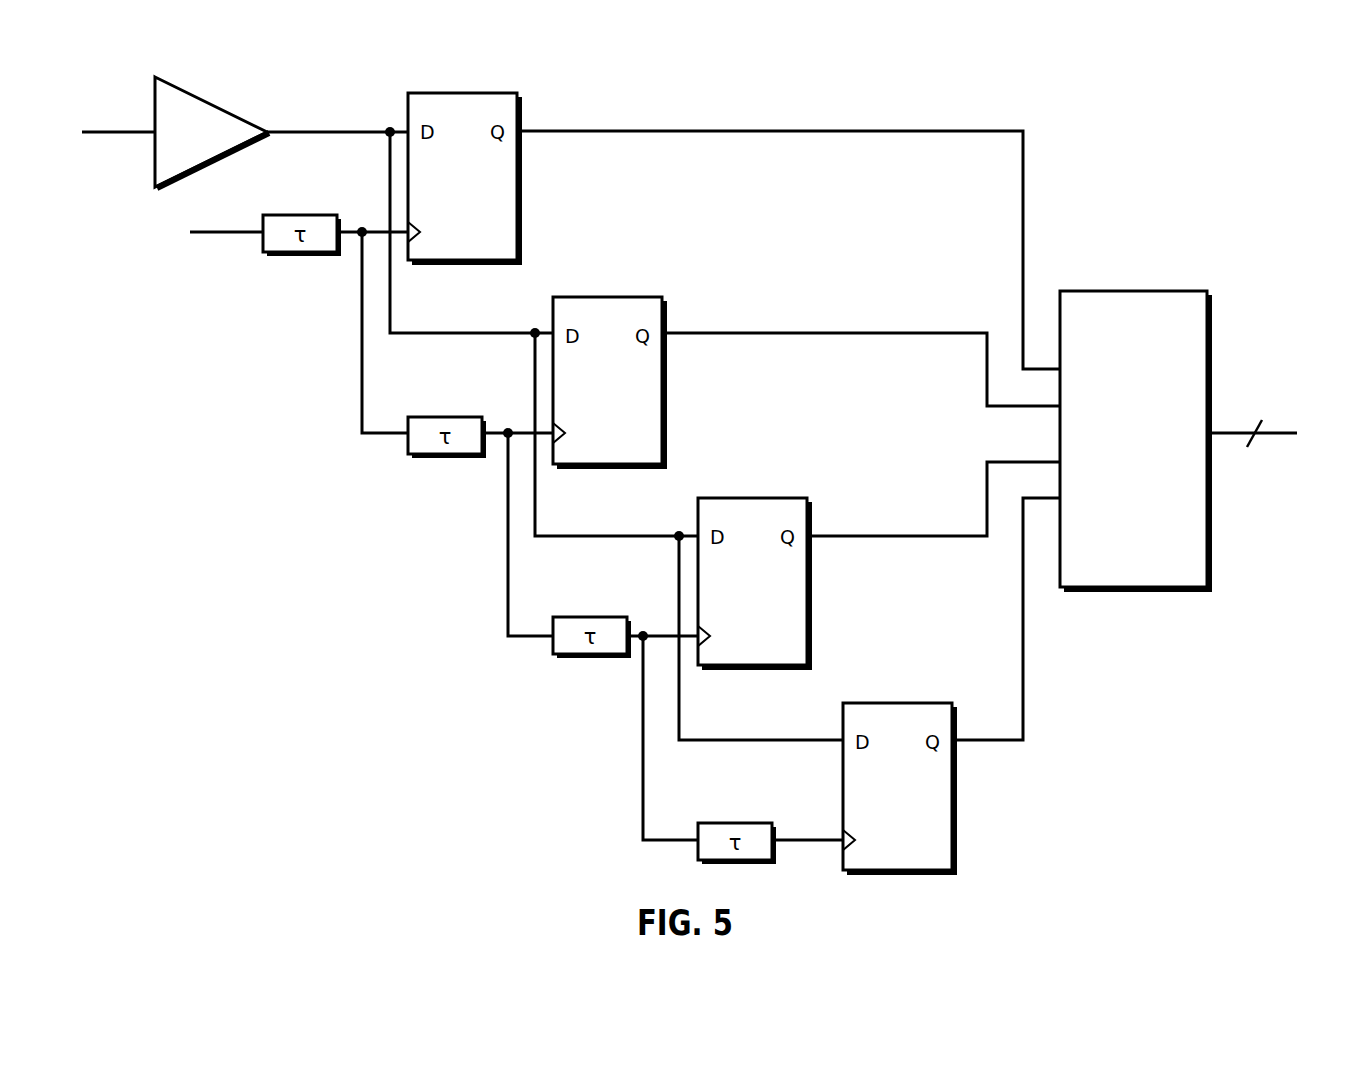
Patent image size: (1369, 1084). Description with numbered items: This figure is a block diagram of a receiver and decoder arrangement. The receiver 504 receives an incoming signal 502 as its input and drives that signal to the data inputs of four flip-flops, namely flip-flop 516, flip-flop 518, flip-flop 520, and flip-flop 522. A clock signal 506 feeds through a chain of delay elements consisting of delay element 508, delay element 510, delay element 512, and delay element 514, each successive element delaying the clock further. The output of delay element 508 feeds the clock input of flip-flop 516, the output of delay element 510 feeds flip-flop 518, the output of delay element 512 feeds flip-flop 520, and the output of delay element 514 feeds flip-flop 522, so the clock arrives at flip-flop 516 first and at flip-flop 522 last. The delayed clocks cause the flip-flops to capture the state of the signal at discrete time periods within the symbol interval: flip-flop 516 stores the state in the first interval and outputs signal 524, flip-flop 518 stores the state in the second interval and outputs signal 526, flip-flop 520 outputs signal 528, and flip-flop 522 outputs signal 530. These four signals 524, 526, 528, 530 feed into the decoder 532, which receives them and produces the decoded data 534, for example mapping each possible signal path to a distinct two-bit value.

The signal 502 is at (117, 118).
The receiver 504 is at (212, 132).
The clock signal 506 is at (194, 230).
The delay element 508 is at (302, 221).
The delay element 510 is at (447, 423).
The delay element 512 is at (592, 624).
The delay element 514 is at (737, 829).
The flip-flop 516 is at (465, 179).
The flip-flop 518 is at (610, 383).
The flip-flop 520 is at (755, 584).
The flip-flop 522 is at (900, 789).
The signal 524 is at (788, 233).
The signal 526 is at (861, 353).
The signal 528 is at (933, 499).
The signal 530 is at (1006, 619).
The decoder 532 is at (1136, 441).
The decoded data 534 is at (1262, 409).